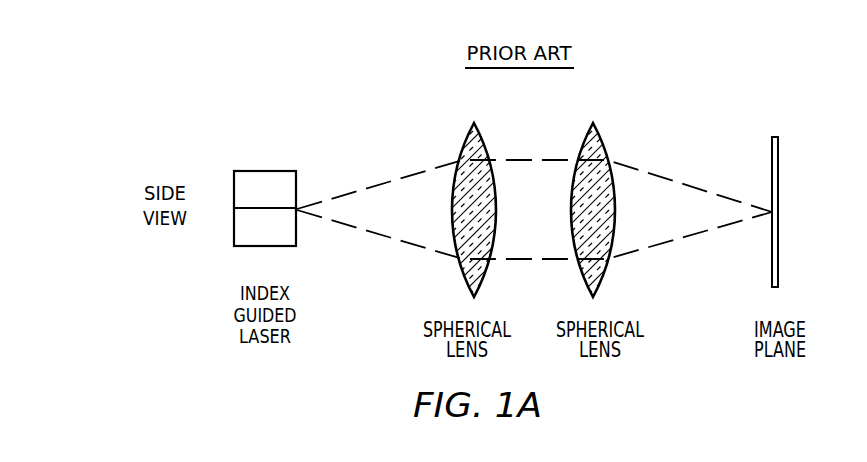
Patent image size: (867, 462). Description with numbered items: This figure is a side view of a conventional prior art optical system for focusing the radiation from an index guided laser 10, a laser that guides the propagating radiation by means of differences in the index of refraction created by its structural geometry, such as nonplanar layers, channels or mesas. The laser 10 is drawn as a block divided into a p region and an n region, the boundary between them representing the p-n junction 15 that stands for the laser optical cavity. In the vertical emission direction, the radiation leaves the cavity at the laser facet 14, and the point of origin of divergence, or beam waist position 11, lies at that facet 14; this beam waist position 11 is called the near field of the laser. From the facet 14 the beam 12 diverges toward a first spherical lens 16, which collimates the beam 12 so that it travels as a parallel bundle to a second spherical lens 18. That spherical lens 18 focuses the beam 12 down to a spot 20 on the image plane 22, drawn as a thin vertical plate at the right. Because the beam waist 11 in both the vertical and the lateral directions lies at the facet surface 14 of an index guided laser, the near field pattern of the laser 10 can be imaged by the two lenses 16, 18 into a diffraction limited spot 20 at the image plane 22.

The index guided laser 10 is at (245, 155).
The beam waist position 11 is at (298, 207).
The beam 12 is at (390, 182).
The laser facet 14 is at (297, 232).
The p-n junction 15 is at (282, 207).
The spherical lens 16 is at (486, 150).
The spherical lens 18 is at (607, 150).
The spot 20 is at (770, 214).
The image plane 22 is at (780, 170).